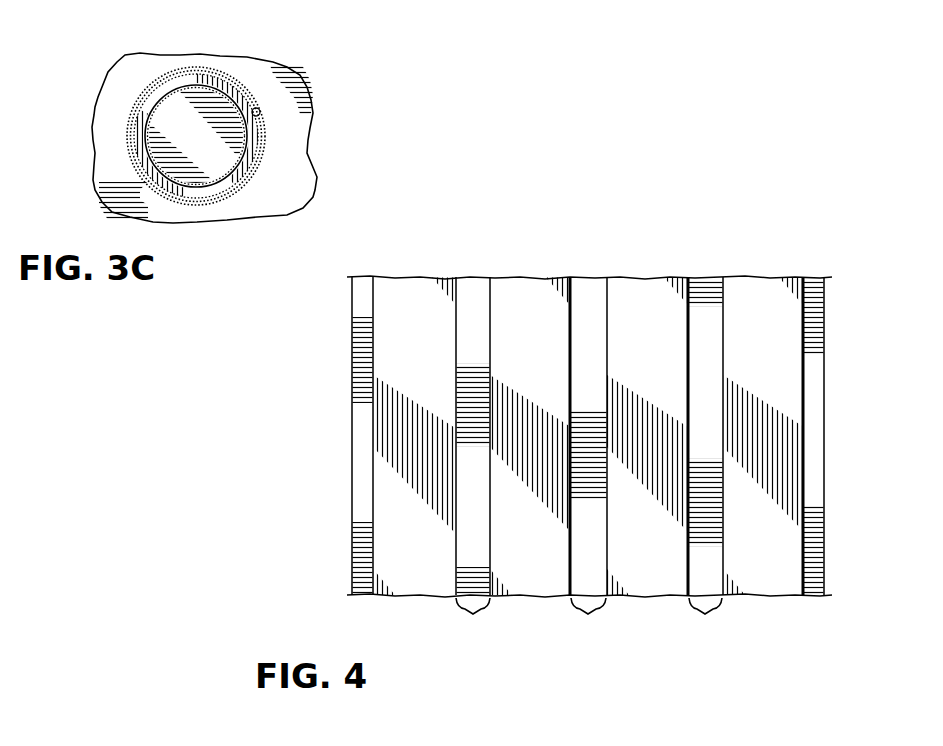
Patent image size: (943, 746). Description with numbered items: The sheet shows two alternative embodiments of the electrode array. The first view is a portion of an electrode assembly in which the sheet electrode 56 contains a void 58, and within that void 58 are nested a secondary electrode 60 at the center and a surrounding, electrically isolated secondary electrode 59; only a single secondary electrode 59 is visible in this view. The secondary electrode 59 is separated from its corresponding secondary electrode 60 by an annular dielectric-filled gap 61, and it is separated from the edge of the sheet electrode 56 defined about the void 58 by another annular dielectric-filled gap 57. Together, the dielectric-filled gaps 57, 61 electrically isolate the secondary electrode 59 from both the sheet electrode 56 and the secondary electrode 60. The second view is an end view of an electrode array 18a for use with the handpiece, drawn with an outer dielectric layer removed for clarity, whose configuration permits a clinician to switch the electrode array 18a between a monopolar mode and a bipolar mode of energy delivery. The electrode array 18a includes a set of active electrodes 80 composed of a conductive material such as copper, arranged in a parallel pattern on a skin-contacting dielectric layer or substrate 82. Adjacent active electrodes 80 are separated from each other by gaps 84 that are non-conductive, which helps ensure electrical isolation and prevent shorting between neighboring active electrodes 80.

In FIG. 3C, the sheet electrode 56 is at (288, 190).
In FIG. 3C, the annular dielectric-filled gap 57 is at (193, 200).
In FIG. 3C, the void 58 is at (258, 118).
In FIG. 3C, the secondary electrode 59 is at (137, 132).
In FIG. 3C, the secondary electrode 60 is at (168, 105).
In FIG. 3C, the annular dielectric-filled gap 61 is at (215, 90).
In FIG. 4, the electrode array 18a is at (316, 347).
In FIG. 4, the active electrodes 80 is at (627, 302).
In FIG. 4, the dielectric layer or substrate 82 is at (478, 296).
In FIG. 4, the gaps 84 is at (588, 623).